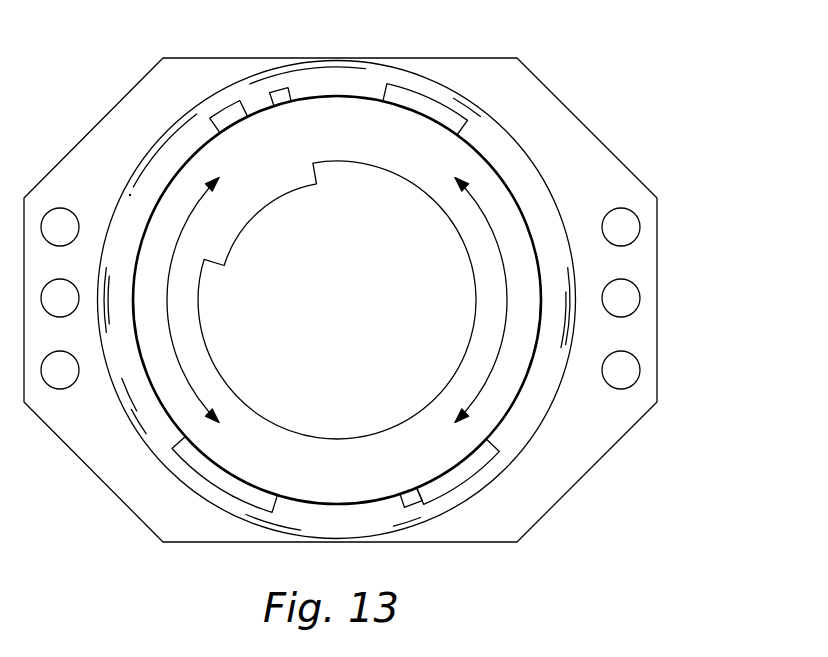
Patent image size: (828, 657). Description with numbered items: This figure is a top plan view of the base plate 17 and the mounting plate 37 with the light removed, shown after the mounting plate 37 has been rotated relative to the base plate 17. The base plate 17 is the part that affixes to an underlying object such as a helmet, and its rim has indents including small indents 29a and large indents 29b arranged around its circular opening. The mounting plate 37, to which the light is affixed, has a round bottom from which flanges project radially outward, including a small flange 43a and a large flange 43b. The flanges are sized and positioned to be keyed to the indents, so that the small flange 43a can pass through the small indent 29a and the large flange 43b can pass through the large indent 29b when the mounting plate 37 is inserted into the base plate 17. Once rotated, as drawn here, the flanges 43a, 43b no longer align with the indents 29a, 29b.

The base plate 17 is at (623, 188).
The mounting plate 37 is at (505, 213).
The small indent 29a is at (227, 118).
The large indent 29b is at (484, 454).
The small flange 43a is at (268, 102).
The large flange 43b is at (416, 496).